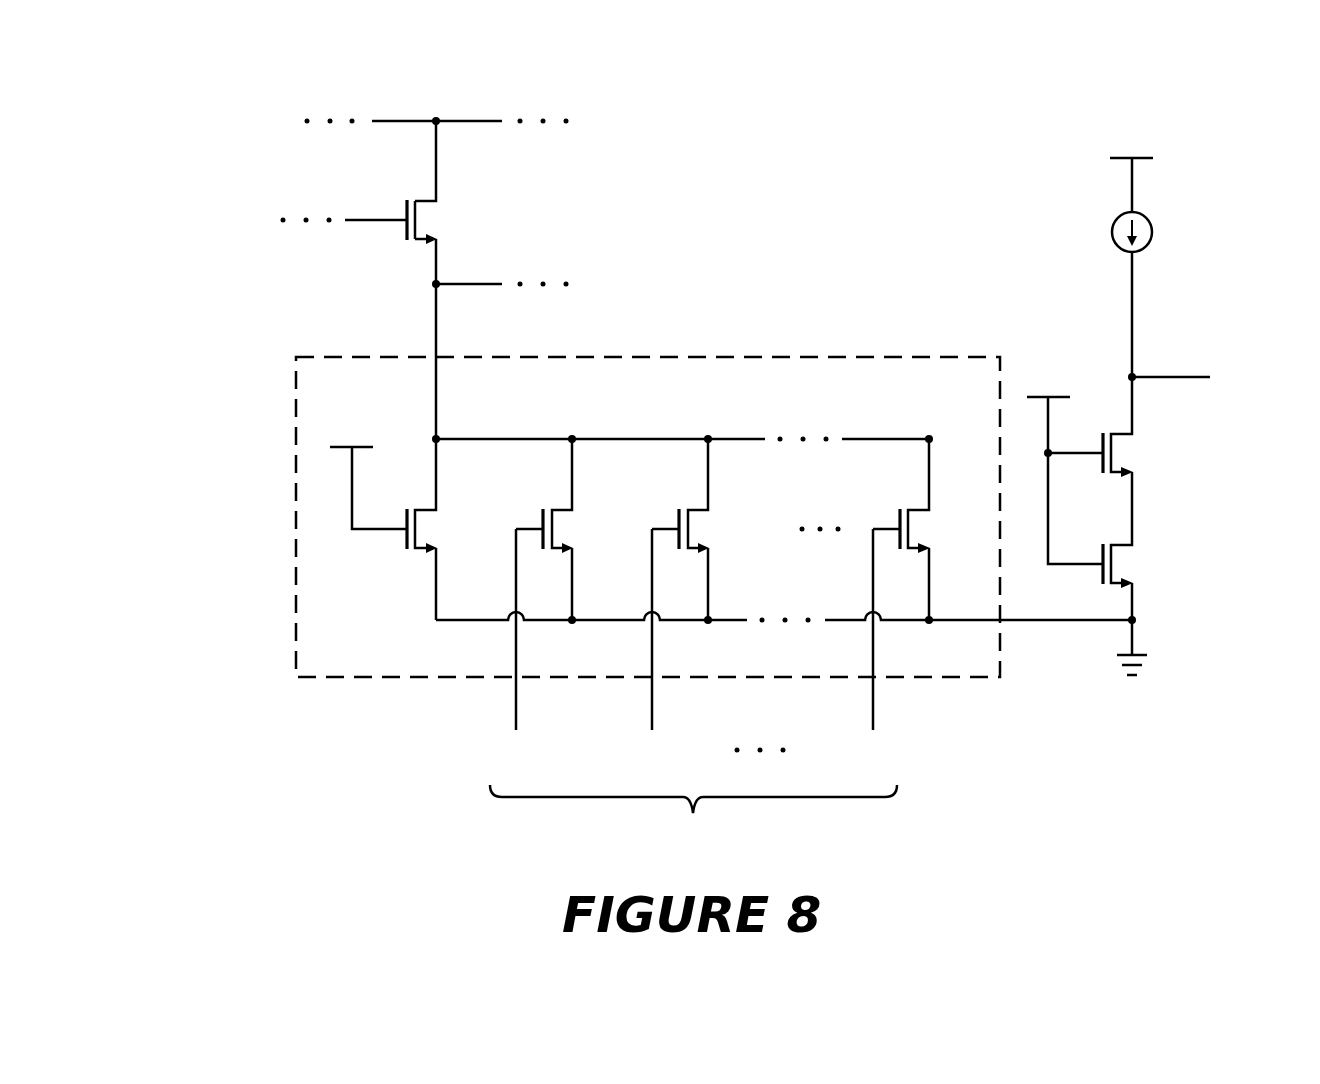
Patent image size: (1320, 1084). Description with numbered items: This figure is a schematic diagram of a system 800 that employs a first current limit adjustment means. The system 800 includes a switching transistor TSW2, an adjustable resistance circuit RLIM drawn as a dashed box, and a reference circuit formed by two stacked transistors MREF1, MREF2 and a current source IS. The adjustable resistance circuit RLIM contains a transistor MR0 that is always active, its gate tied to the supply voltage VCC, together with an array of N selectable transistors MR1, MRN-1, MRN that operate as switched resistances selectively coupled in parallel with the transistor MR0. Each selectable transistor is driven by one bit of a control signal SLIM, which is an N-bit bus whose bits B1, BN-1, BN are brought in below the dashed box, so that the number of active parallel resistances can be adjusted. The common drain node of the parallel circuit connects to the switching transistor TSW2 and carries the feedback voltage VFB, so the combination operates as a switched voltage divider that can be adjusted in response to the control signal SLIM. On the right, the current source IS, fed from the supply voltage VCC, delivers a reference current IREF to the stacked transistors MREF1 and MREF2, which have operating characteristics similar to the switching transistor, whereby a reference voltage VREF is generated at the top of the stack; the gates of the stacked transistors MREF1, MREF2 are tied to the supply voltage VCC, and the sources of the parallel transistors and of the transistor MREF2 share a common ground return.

The system 800 is at (700, 459).
The switching transistor TSW2 is at (427, 202).
The adjustable resistance circuit RLIM is at (296, 612).
The feedback voltage VFB is at (437, 393).
The supply voltage VCC is at (755, 336).
The transistor MR0 is at (446, 529).
The selectable transistor MRN is at (570, 529).
The selectable transistor MRN-1 is at (716, 529).
The selectable transistor MR1 is at (926, 529).
The control signal bit BN is at (523, 646).
The control signal bit BN-1 is at (661, 646).
The control signal bit B1 is at (881, 646).
The control signal SLIM is at (693, 814).
The reference transistor MREF1 is at (1159, 442).
The reference transistor MREF2 is at (1159, 581).
The current source IS is at (1152, 234).
The reference current IREF is at (1155, 282).
The reference voltage VREF is at (1205, 380).